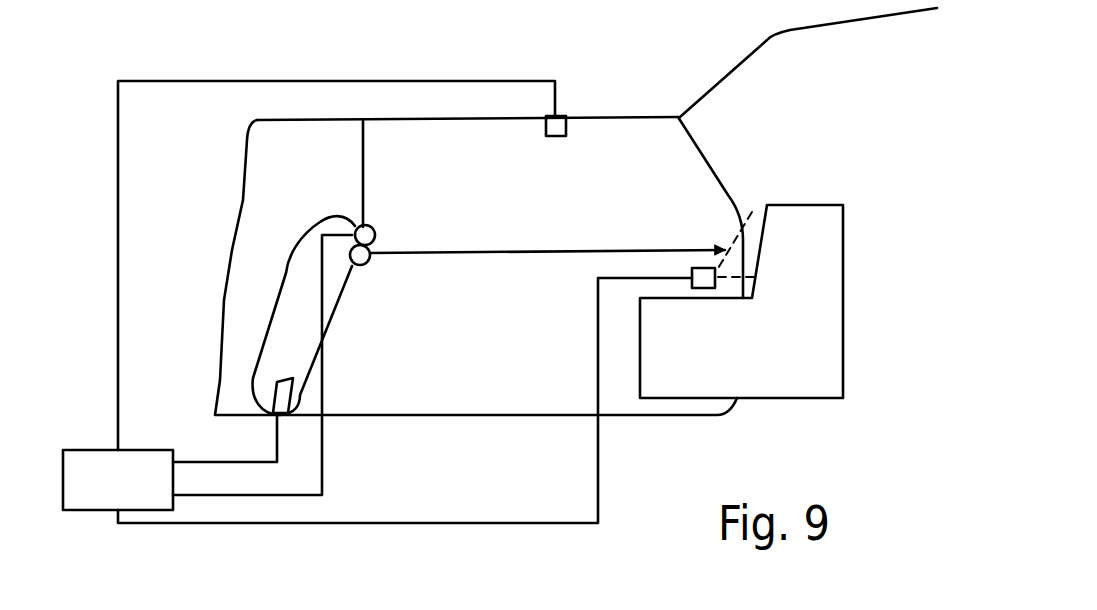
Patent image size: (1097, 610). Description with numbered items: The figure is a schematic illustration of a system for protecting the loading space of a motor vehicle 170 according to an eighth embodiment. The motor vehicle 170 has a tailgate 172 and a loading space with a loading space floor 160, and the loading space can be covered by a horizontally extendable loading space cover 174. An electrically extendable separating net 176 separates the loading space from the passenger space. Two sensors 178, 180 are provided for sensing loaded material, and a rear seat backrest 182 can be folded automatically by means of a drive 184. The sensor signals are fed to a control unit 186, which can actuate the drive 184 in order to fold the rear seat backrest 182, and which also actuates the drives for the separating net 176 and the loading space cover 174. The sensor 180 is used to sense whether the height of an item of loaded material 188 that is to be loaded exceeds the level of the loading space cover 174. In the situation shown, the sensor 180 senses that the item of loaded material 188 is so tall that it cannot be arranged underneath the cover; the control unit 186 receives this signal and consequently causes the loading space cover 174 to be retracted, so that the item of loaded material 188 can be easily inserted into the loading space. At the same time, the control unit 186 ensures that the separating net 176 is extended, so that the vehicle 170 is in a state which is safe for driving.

The loading space floor 160 is at (543, 418).
The motor vehicle 170 is at (633, 117).
The tailgate 172 is at (720, 80).
The loading space cover 174 is at (507, 253).
The separating net 176 is at (365, 184).
The sensor 178 is at (560, 118).
The sensor 180 is at (700, 270).
The rear seat backrest 182 is at (305, 289).
The drive 184 is at (263, 382).
The control unit 186 is at (139, 495).
The item of loaded material 188 is at (779, 365).